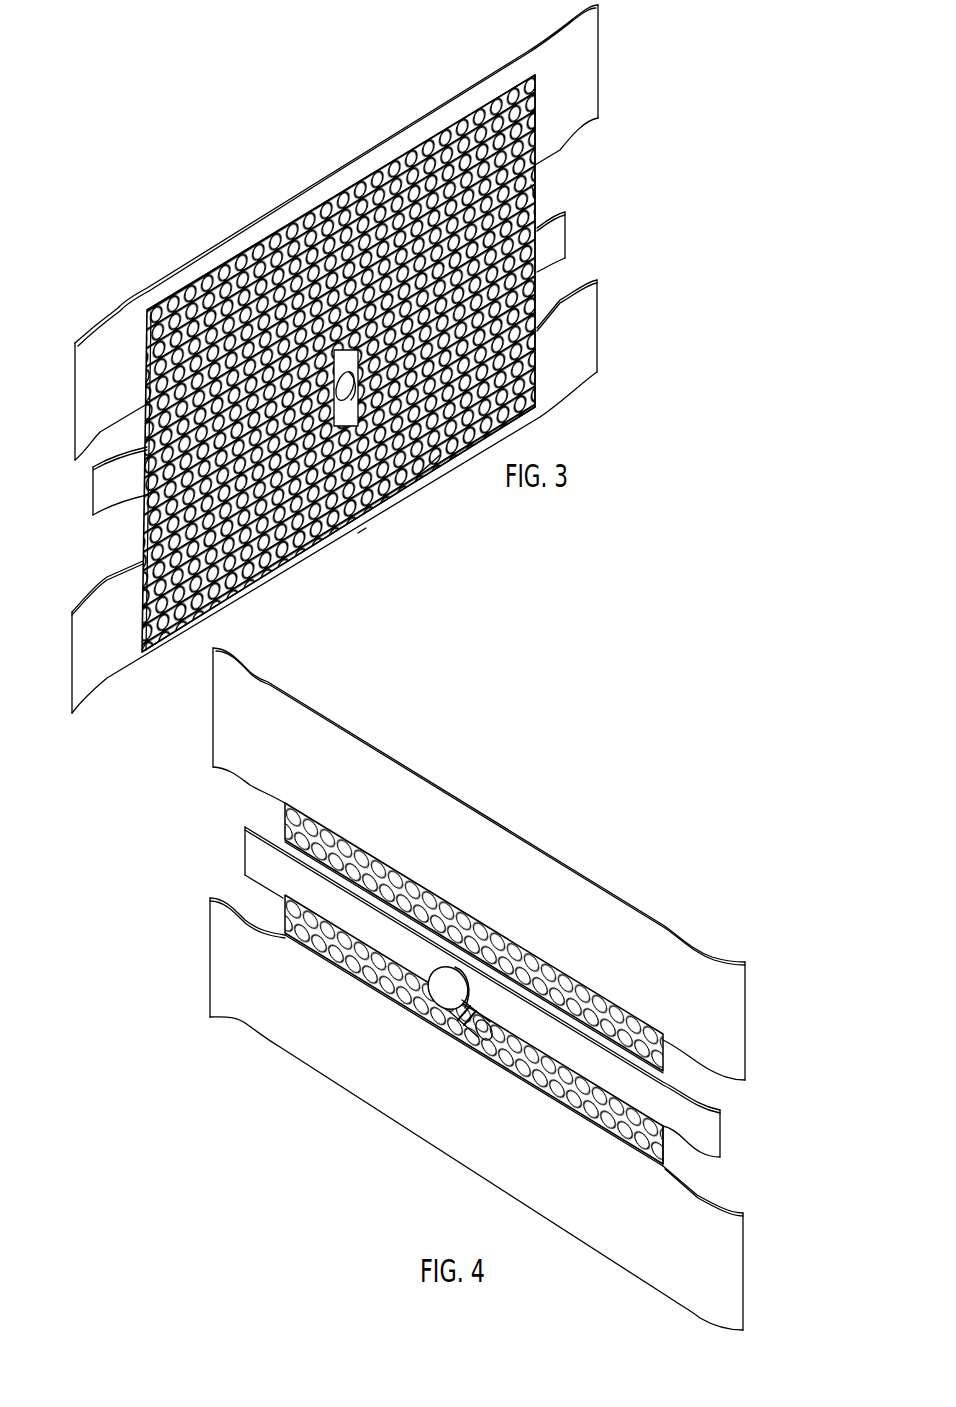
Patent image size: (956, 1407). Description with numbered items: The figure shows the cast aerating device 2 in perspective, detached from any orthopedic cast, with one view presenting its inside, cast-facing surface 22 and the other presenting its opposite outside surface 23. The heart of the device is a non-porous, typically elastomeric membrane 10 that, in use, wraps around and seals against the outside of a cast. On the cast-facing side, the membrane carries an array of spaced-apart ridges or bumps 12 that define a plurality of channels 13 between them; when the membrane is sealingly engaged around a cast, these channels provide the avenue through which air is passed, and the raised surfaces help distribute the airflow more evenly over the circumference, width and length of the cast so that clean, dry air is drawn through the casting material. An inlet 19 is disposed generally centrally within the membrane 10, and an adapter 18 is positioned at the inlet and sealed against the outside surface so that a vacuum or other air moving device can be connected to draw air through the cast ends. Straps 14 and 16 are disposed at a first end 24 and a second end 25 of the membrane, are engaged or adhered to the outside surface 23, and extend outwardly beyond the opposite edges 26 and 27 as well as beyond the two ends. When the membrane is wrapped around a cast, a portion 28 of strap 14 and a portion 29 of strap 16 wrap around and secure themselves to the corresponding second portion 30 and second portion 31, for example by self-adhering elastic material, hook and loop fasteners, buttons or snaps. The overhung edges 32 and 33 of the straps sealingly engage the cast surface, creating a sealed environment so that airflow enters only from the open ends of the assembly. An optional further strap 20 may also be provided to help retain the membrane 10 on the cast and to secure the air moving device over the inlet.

In FIG. 3, the cast aerating device 2 is at (434, 78).
In FIG. 4, the cast aerating device 2 is at (490, 755).
In FIG. 3, the membrane 10 is at (403, 136).
In FIG. 3, the ridges or bumps 12 is at (534, 143).
In FIG. 3, the channels 13 is at (536, 282).
In FIG. 3, the strap 14 is at (598, 345).
In FIG. 4, the strap 14 is at (210, 955).
In FIG. 3, the strap 16 is at (600, 95).
In FIG. 4, the strap 16 is at (212, 707).
In FIG. 4, the adapter 18 is at (438, 1010).
In FIG. 3, the inlet 19 is at (420, 473).
In FIG. 3, the strap 20 is at (566, 232).
In FIG. 4, the strap 20 is at (243, 843).
In FIG. 3, the inside, cast-facing surface 22 is at (540, 52).
In FIG. 4, the outside surface 23 is at (663, 1150).
In FIG. 3, the first end 24 is at (268, 585).
In FIG. 3, the second end 25 is at (197, 280).
In FIG. 3, the edge 26 is at (537, 190).
In FIG. 3, the edge 27 is at (140, 517).
In FIG. 3, the portion of strap 28 is at (597, 310).
In FIG. 3, the portion of strap 29 is at (600, 48).
In FIG. 3, the second portion of strap 30 is at (87, 688).
In FIG. 4, the second portion of strap 30 is at (745, 1263).
In FIG. 3, the second portion of strap 31 is at (88, 437).
In FIG. 4, the second portion of strap 31 is at (745, 1018).
In FIG. 3, the overhung edge 32 is at (358, 533).
In FIG. 3, the overhung edge 33 is at (265, 215).